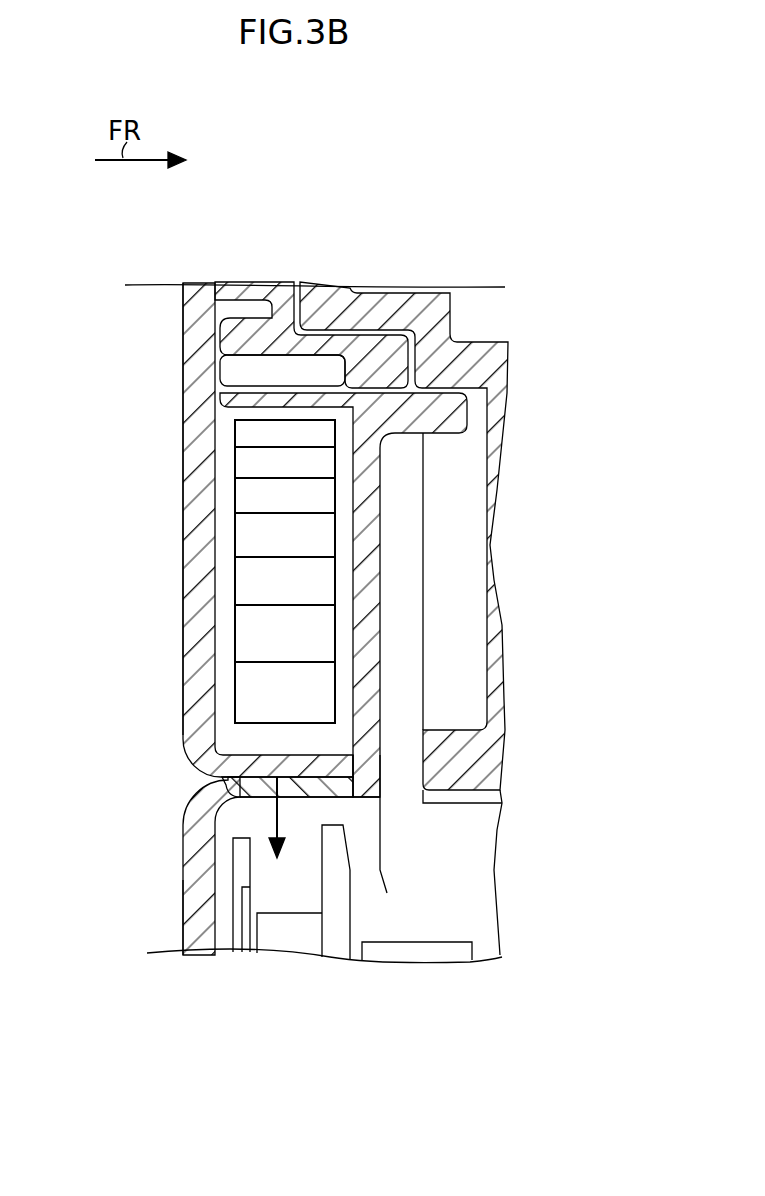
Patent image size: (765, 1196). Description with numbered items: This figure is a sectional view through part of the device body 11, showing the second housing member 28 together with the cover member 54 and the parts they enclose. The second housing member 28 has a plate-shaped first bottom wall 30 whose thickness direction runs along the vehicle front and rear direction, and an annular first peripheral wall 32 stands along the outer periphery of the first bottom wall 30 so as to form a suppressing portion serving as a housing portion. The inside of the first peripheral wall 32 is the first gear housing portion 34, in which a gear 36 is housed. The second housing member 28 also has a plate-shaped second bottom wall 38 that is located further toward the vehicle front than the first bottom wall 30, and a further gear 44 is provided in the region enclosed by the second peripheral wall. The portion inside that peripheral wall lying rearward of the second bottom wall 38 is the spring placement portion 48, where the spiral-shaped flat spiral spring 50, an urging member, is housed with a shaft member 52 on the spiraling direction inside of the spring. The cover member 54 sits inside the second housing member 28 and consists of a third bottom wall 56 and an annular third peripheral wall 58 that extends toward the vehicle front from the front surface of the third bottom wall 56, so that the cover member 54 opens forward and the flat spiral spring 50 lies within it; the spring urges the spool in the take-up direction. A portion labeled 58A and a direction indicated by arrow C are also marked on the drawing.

The device body 11 is at (125, 930).
The second housing member 28 is at (183, 857).
The first bottom wall 30 is at (186, 930).
The first peripheral wall 32 is at (303, 790).
The first gear housing portion 34 is at (227, 836).
The gear 36 is at (349, 920).
The second bottom wall 38 is at (375, 610).
The gear 44 is at (505, 370).
The spring placement portion 48 is at (227, 553).
The flat spiral spring 50 is at (240, 490).
The shaft member 52 is at (218, 329).
The cover member 54 is at (185, 412).
The third bottom wall 56 is at (215, 390).
The third peripheral wall 58 is at (323, 800).
The seal protrusion 58A is at (350, 777).
The direction C is at (275, 818).